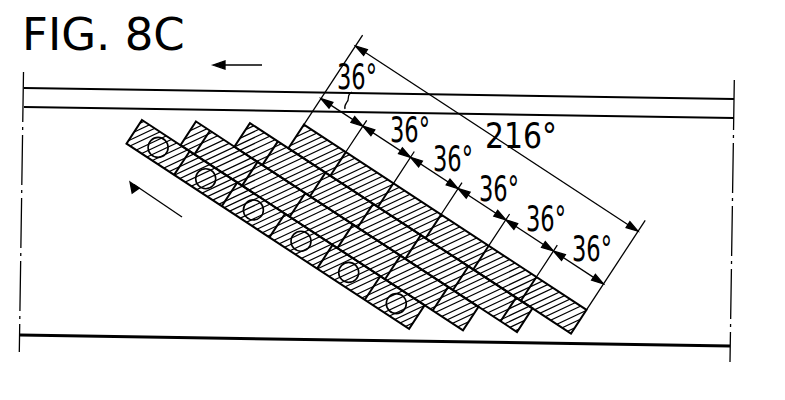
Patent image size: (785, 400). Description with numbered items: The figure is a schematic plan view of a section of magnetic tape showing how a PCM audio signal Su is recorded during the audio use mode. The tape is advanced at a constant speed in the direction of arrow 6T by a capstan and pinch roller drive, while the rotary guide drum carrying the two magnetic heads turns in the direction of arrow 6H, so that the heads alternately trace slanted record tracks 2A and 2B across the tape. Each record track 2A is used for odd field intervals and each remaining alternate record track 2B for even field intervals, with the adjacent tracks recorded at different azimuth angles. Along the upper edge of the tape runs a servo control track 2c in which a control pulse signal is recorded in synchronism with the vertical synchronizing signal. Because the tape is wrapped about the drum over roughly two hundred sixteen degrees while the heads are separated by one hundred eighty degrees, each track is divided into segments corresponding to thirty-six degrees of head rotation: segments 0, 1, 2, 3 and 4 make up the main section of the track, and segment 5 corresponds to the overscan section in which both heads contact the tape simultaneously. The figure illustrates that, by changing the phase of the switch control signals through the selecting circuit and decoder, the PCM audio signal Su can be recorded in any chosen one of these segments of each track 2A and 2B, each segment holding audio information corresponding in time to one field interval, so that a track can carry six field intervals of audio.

The servo control track 2c is at (562, 100).
The record track 2A is at (410, 330).
The record track 2B is at (464, 332).
The PCM audio signal Su is at (127, 145).
The arrow indicating rotation direction of the rotary guide drum 6H is at (143, 203).
The arrow indicating tape advance direction 6T is at (234, 65).
The segment 0 is at (349, 272).
The segment 1 is at (301, 241).
The segment 2 is at (253, 210).
The segment 3 is at (206, 179).
The segment 4 is at (158, 147).
The segment 5 is at (396, 304).